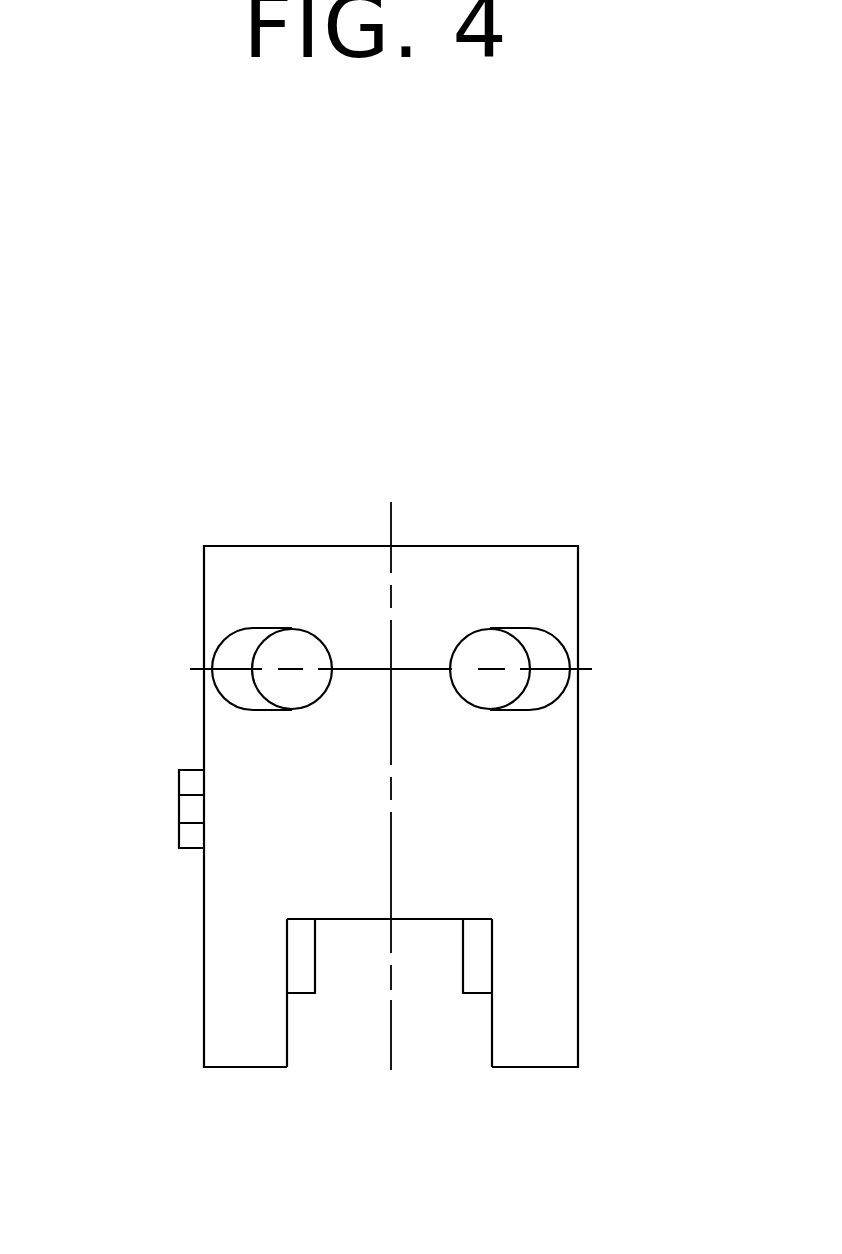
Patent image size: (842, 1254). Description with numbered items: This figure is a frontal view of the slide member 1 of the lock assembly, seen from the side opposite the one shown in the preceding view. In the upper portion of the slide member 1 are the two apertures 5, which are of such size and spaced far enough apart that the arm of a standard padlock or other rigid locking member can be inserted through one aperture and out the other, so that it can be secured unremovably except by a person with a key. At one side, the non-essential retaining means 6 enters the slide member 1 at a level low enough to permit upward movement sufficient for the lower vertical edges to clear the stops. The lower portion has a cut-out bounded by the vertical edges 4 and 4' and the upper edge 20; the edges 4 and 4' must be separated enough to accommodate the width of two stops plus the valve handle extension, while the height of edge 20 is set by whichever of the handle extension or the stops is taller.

The slide member 1 is at (204, 617).
The apertures 5 is at (300, 627).
The retaining means 6 is at (179, 807).
The edge 20 is at (407, 918).
The edge 4 is at (318, 1050).
The edge 4' is at (473, 1050).